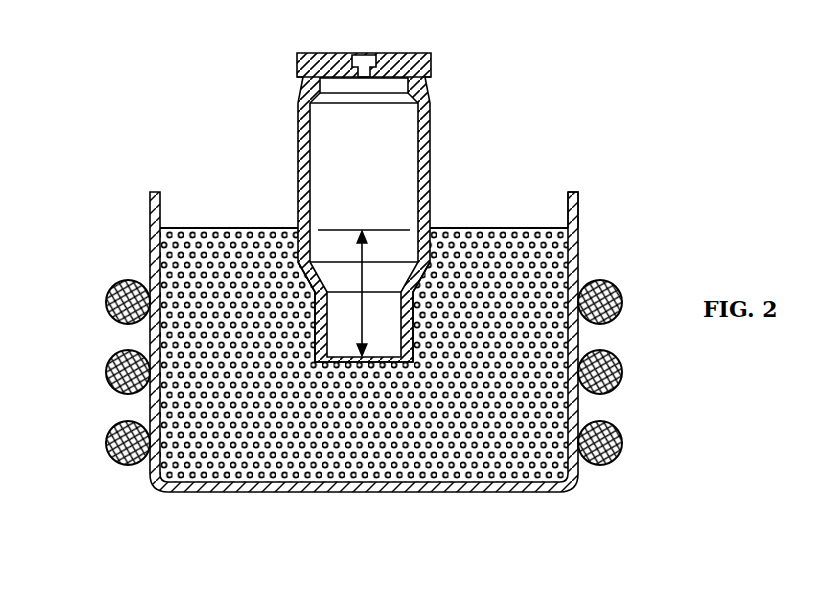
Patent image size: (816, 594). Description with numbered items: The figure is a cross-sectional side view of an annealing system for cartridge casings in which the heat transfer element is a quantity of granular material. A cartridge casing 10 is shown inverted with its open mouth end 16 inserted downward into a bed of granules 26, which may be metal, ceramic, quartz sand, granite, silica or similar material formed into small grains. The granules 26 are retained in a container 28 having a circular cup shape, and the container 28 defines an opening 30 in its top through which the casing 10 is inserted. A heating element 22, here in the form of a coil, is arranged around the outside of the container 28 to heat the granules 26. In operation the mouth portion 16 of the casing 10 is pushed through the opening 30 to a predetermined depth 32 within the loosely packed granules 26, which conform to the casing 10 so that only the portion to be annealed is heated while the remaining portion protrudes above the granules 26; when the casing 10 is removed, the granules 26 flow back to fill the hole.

The cartridge casing 10 is at (430, 128).
The mouth end 16 is at (317, 326).
The heating element 22 is at (120, 285).
The granules 26 is at (186, 226).
The container 28 is at (480, 492).
The opening 30 is at (574, 190).
The predetermined depth 32 is at (364, 293).